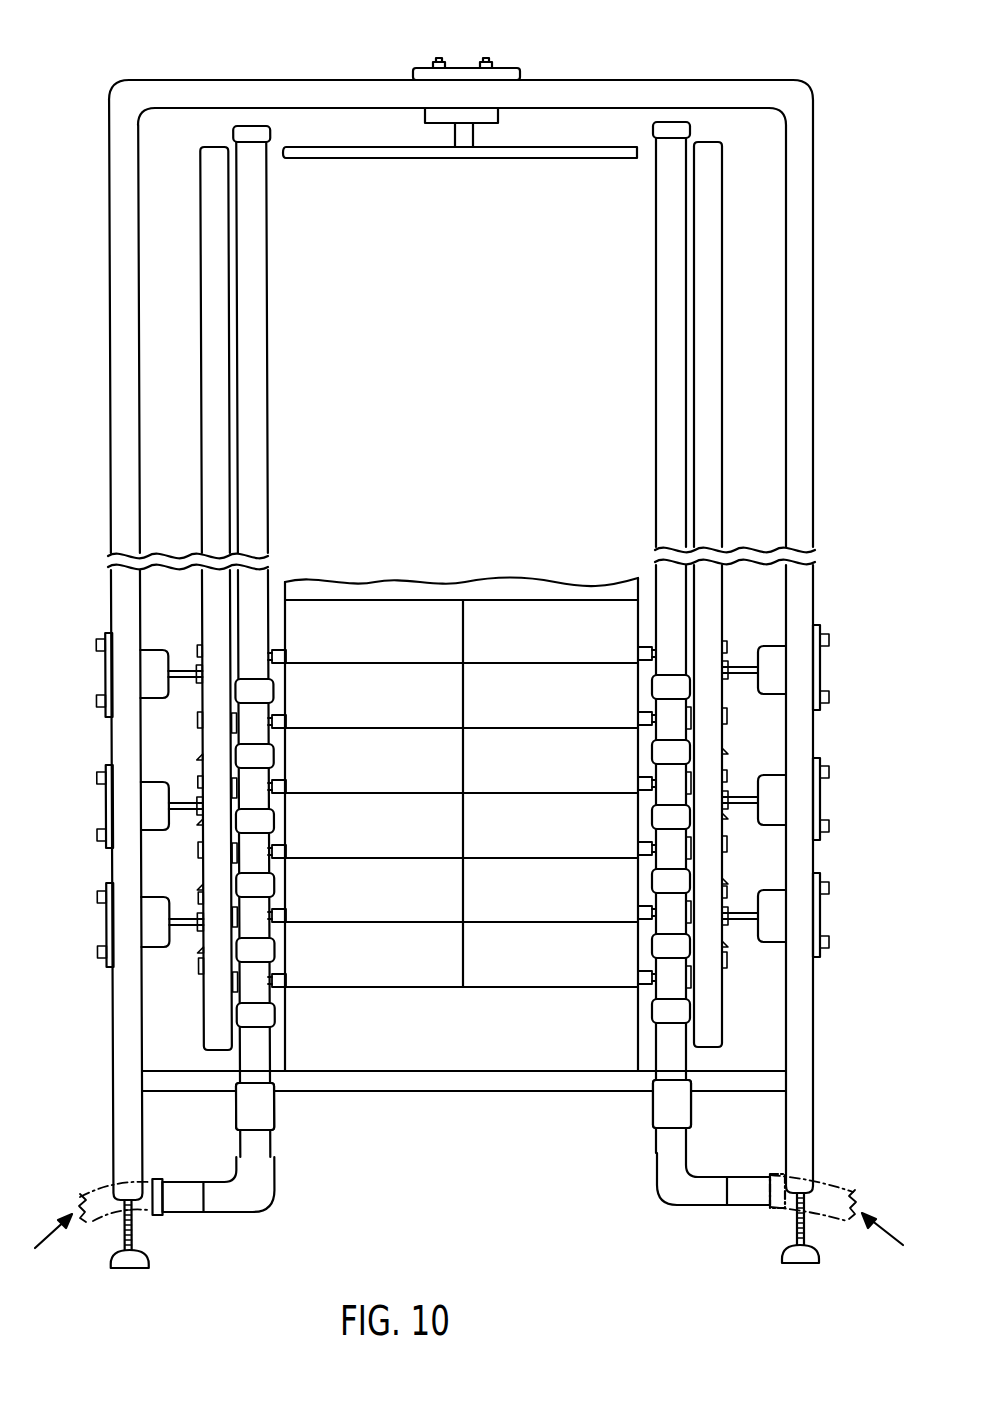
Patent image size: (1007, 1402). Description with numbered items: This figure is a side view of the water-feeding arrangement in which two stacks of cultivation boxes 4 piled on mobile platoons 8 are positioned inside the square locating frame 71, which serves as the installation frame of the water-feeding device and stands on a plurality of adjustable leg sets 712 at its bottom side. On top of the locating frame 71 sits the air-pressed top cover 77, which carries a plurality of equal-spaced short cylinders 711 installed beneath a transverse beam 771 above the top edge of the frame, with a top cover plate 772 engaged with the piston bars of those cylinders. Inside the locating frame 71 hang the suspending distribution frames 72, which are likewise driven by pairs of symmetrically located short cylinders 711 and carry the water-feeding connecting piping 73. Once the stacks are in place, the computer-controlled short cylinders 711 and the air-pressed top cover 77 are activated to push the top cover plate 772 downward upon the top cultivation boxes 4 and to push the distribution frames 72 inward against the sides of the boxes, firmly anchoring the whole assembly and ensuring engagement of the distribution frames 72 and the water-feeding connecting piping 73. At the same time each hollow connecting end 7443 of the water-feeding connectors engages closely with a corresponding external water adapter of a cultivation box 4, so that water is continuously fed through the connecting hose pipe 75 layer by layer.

The cultivation box 4 is at (428, 613).
The mobile platoon 8 is at (430, 1045).
The locating frame 71 is at (817, 213).
The distribution frame 72 is at (200, 311).
The water-feeding connecting piping 73 is at (270, 314).
The connecting hose pipe 75 is at (833, 1190).
The air-pressed top cover 77 is at (460, 126).
The short cylinder 711 is at (499, 114).
The adjustable leg set 712 is at (807, 1257).
The transverse beam 771 is at (427, 67).
The top cover plate 772 is at (530, 160).
The connecting end 7443 is at (278, 654).